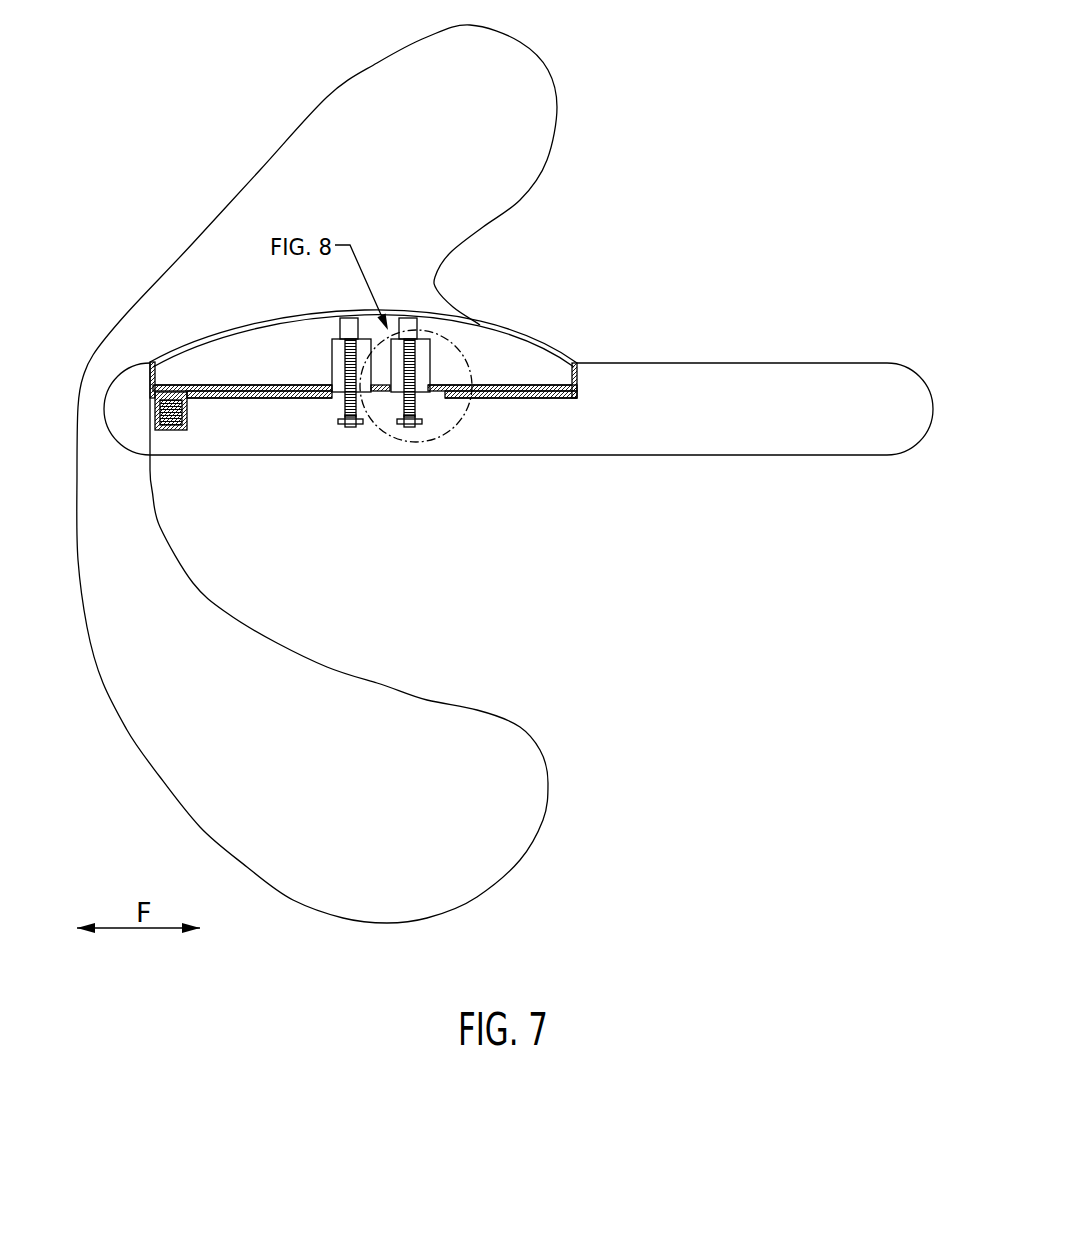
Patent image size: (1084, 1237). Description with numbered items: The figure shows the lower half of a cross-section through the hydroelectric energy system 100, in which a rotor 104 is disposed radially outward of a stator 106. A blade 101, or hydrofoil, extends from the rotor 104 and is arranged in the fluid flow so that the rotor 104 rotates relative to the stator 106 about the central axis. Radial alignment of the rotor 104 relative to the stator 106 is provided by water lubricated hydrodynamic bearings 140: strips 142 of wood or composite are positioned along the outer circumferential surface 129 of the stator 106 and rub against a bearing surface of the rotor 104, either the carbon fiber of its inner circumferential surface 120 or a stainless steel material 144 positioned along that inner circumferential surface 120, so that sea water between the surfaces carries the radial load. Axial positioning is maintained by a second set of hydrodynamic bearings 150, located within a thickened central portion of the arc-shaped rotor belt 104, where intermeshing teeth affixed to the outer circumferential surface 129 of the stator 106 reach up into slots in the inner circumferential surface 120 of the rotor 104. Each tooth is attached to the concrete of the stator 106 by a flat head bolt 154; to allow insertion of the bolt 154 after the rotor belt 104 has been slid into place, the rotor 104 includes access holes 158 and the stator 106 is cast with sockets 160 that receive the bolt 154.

The hydroelectric energy system 100 is at (714, 146).
The blade 101 is at (252, 202).
The rotor 104 is at (252, 337).
The stator 106 is at (828, 378).
The inner circumferential surface 120 is at (277, 383).
The outer circumferential surface 129 is at (230, 398).
The hydrodynamic bearings 140 is at (212, 407).
The strips 142 is at (265, 398).
The stainless steel material 144 is at (203, 383).
The hydrodynamic bearings 150 is at (400, 407).
The bolt 154 is at (346, 405).
The access holes 158 is at (348, 320).
The sockets 160 is at (345, 428).